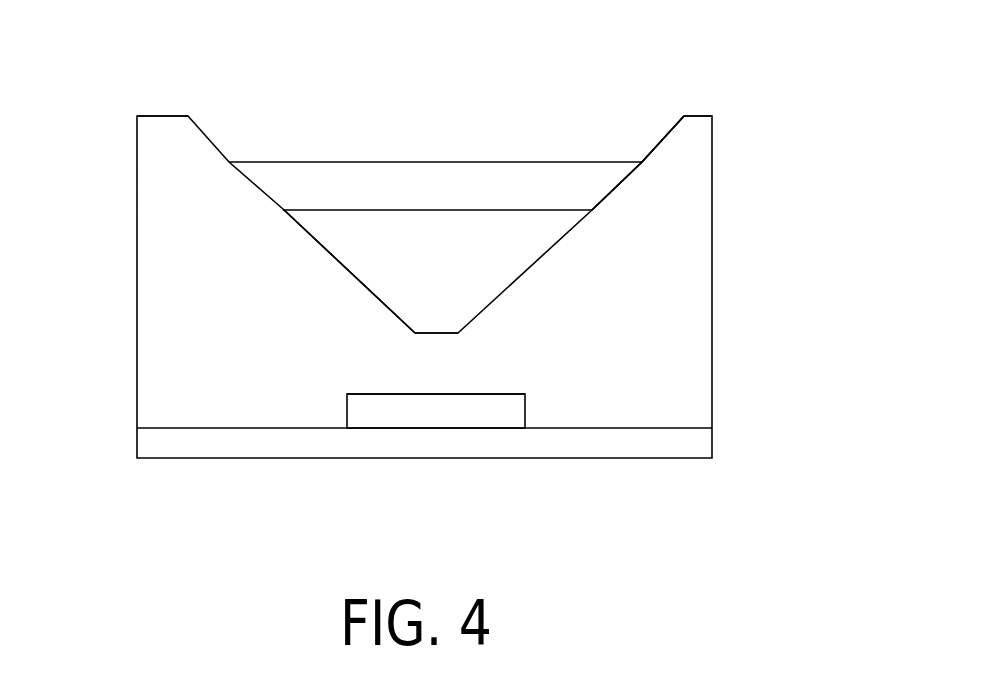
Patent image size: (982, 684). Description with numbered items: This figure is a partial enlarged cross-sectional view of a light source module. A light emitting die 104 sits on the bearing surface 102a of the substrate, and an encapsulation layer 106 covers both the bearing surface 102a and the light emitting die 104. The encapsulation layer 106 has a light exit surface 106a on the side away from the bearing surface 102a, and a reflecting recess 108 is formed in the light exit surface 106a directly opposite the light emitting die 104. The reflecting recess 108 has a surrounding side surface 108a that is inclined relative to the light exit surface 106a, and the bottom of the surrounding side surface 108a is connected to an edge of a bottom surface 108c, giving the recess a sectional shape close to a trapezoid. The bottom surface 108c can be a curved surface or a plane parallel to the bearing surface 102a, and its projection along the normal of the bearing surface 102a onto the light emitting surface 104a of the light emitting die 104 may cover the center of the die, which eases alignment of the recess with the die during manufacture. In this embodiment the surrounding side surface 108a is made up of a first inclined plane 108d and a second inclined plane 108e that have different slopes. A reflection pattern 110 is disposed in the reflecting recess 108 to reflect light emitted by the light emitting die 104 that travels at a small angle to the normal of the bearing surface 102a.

The bearing surface 102a is at (625, 423).
The light emitting die 104 is at (420, 410).
The light emitting surface 104a is at (473, 394).
The encapsulation layer 106 is at (658, 275).
The light exit surface 106a is at (165, 115).
The reflecting recess 108 is at (400, 152).
The surrounding side surface 108a is at (683, 55).
The bottom surface 108c is at (435, 335).
The first inclined plane 108d is at (607, 195).
The second inclined plane 108e is at (658, 146).
The reflection pattern 110 is at (370, 255).